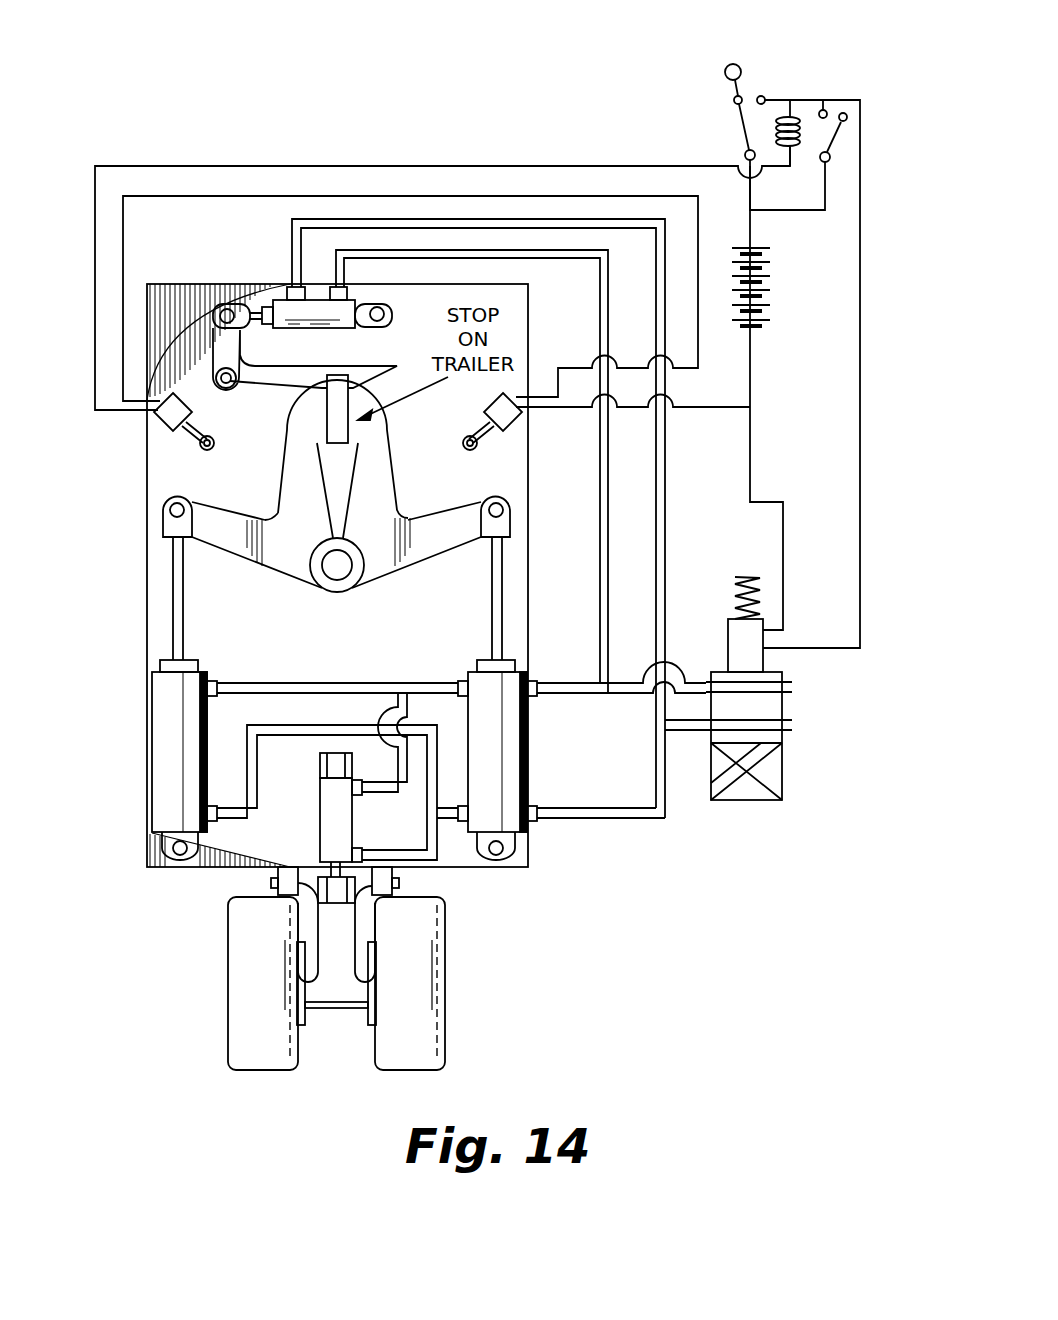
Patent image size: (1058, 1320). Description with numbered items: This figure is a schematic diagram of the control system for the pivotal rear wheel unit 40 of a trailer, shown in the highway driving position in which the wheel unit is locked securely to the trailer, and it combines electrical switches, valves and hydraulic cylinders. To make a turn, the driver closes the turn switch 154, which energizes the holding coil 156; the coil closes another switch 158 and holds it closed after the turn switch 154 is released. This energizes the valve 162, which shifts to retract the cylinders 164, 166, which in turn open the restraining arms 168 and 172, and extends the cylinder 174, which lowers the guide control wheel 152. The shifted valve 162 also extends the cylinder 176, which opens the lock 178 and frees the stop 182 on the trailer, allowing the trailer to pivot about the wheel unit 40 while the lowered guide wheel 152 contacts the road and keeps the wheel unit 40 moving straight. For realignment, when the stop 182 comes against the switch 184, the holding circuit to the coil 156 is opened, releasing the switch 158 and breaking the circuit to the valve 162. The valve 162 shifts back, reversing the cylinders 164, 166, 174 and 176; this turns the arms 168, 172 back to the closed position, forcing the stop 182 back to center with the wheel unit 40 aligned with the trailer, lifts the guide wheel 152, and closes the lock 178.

The rear wheel unit 40 is at (165, 475).
The guide control wheel 152 is at (245, 930).
The turn switch 154 is at (738, 64).
The holding coil 156 is at (793, 117).
The switch 158 is at (840, 132).
The valve 162 is at (755, 800).
The cylinder 164 is at (527, 757).
The cylinder 166 is at (167, 700).
The restraining arm 168 is at (382, 556).
The restraining arm 172 is at (267, 555).
The cylinder 174 is at (343, 823).
The cylinder 176 is at (362, 320).
The lock 178 is at (308, 377).
The stop 182 is at (350, 430).
The switch 184 is at (176, 398).